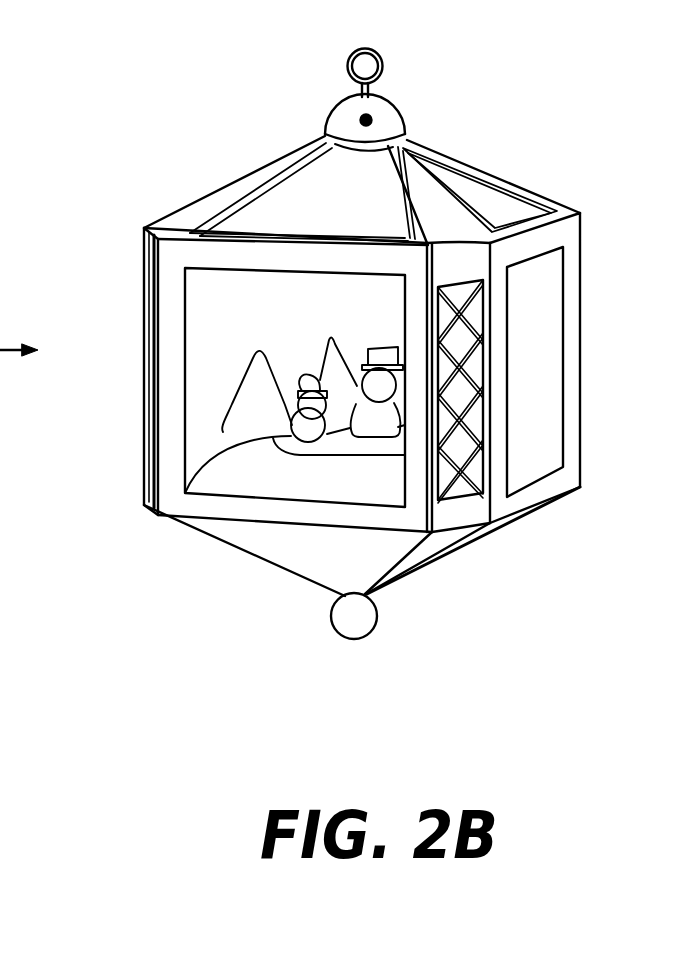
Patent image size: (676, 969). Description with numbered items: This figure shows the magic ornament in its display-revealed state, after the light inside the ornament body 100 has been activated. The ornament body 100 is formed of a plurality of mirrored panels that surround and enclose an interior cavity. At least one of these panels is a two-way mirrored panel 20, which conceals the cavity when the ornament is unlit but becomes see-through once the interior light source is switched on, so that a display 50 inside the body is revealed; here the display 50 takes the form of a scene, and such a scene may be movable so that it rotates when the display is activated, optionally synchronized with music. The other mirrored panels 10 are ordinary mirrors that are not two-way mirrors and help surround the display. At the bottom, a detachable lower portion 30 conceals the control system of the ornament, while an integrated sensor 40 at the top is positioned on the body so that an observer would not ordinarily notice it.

The ornament body 100 is at (210, 195).
The mirrored panel 10 is at (542, 382).
The two-way mirrored panel 20 is at (176, 364).
The detachable lower portion 30 is at (433, 566).
The integrated sensor 40 is at (368, 118).
The display 50 is at (358, 302).